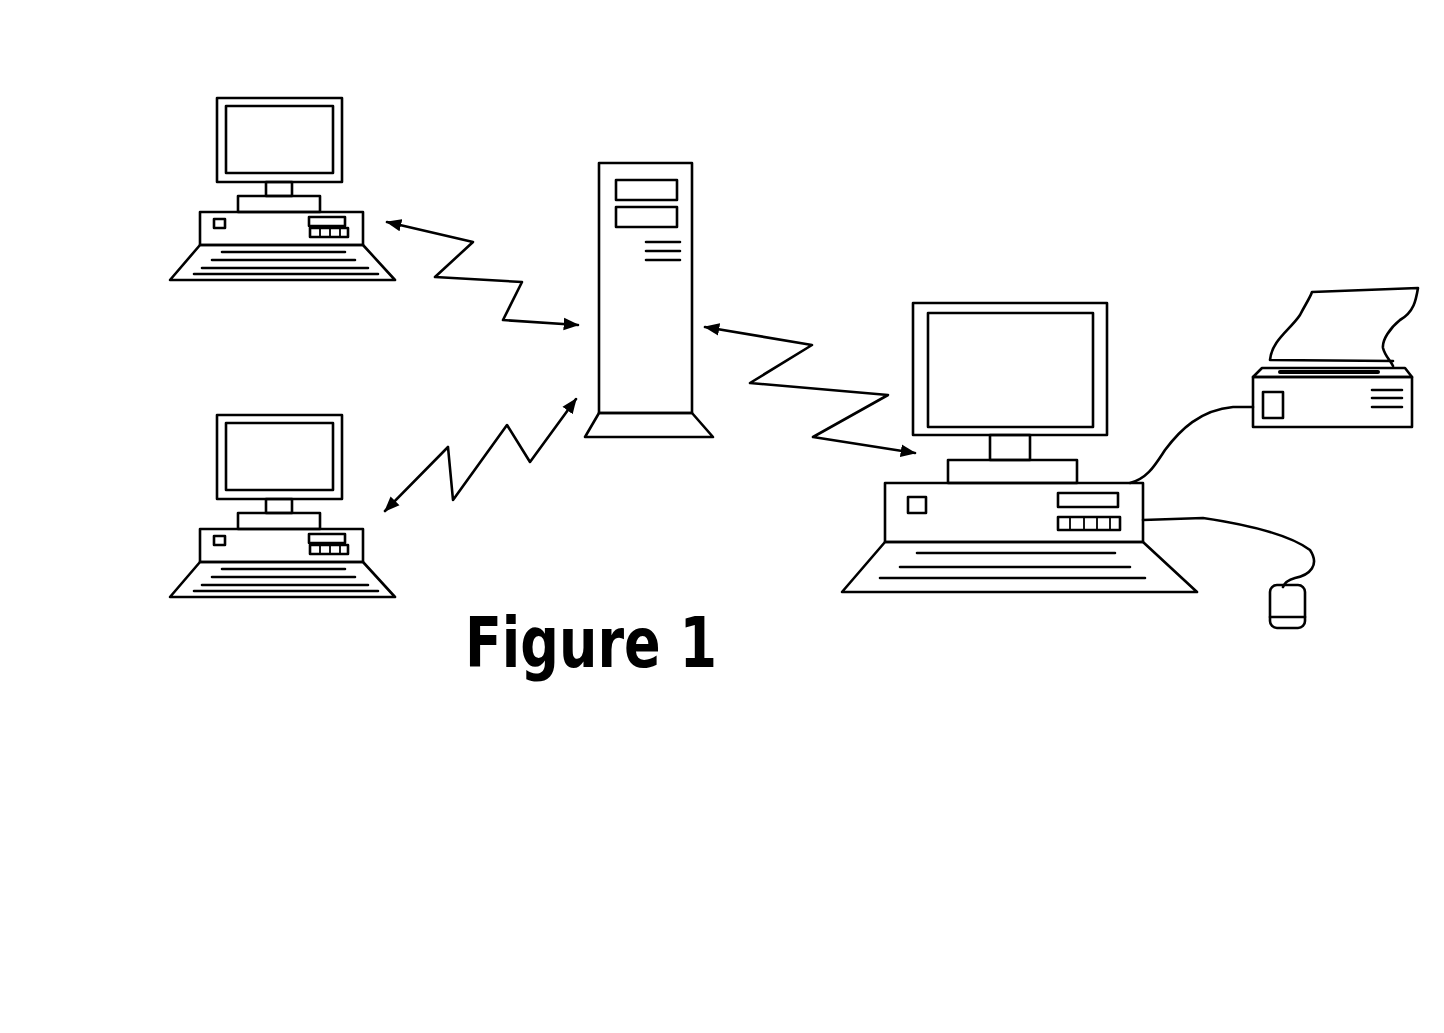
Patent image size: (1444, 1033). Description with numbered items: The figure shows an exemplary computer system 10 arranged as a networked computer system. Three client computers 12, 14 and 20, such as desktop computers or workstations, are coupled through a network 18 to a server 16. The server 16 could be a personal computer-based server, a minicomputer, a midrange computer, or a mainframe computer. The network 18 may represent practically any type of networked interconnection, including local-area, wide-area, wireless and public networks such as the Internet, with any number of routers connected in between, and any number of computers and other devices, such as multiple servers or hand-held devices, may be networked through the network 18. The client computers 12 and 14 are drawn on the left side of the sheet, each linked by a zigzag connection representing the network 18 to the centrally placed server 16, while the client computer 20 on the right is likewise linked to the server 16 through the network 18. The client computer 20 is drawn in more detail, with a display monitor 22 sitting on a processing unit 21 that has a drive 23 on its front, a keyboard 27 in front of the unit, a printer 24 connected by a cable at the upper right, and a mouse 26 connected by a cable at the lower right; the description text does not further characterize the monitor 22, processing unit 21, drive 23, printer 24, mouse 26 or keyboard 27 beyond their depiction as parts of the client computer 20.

The computer system 10 is at (892, 173).
The client computer 12 is at (217, 122).
The client computer 14 is at (217, 425).
The server 16 is at (628, 163).
The network 18 is at (499, 437).
The client computer 20 is at (1094, 298).
The processing unit 21 is at (900, 523).
The display monitor 22 is at (968, 308).
The disk drive 23 is at (1080, 531).
The printer 24 is at (1275, 375).
The mouse 26 is at (1302, 617).
The keyboard 27 is at (867, 590).